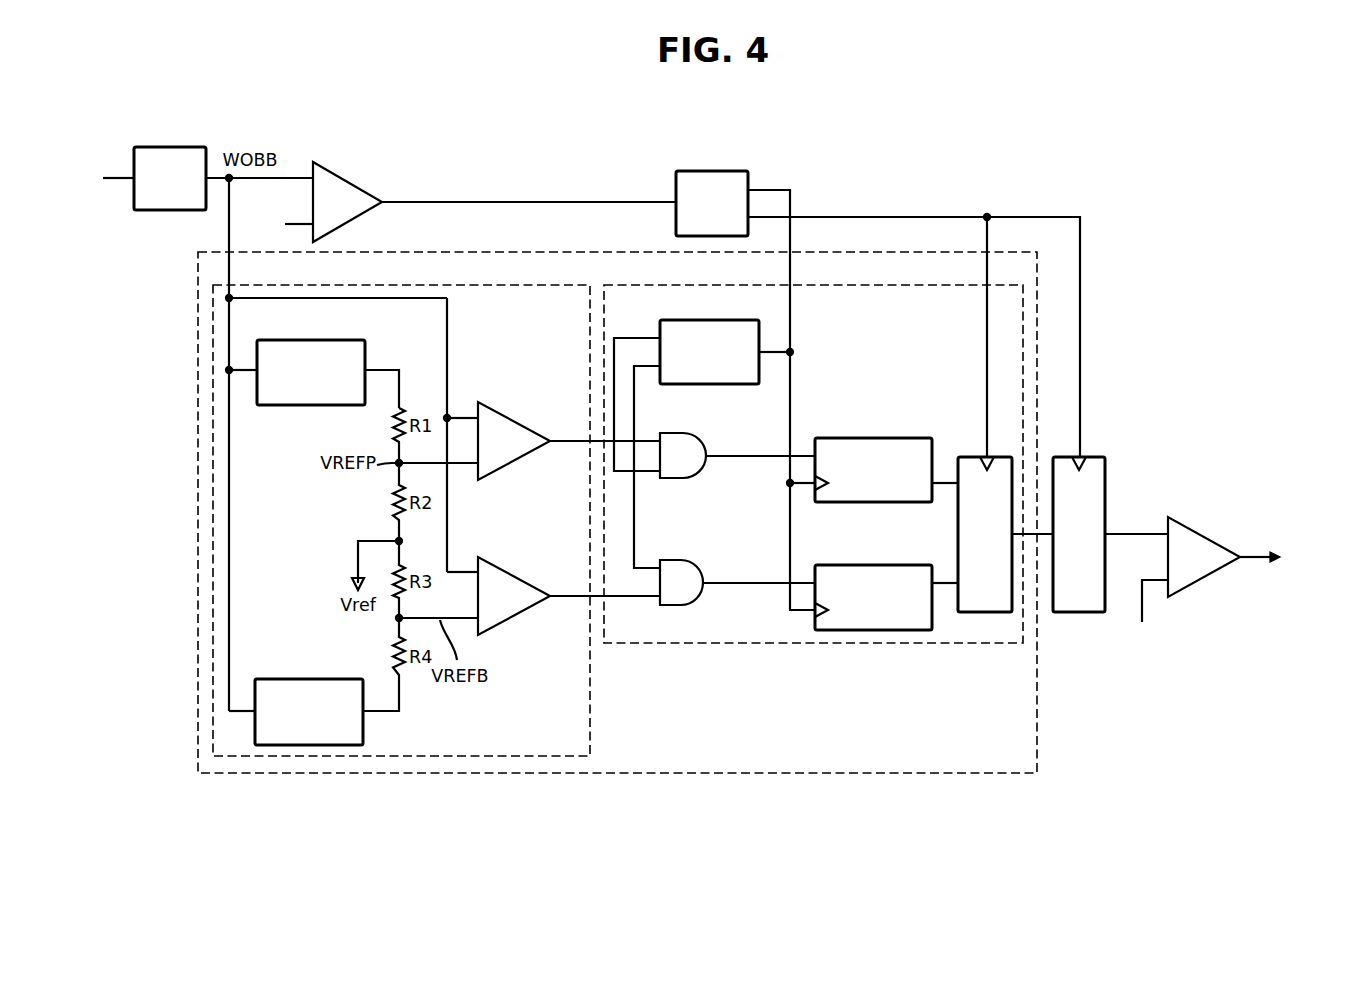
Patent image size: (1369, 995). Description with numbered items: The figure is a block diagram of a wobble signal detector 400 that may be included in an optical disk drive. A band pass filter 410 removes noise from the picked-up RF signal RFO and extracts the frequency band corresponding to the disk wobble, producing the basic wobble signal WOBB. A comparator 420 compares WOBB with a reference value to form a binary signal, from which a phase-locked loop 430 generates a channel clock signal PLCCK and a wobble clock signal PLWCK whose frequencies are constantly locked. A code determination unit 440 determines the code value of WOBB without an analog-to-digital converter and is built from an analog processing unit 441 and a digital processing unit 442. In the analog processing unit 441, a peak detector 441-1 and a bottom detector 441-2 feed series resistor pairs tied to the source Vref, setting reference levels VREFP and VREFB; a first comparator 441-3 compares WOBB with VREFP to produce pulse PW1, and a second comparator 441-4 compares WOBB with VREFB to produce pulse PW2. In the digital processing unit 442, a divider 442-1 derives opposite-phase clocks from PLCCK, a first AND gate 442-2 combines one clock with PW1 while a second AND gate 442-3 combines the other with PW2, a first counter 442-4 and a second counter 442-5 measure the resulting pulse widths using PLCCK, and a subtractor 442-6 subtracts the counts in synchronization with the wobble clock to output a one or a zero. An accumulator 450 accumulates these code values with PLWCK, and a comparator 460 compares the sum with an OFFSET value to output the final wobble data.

The wobble signal detector 400 is at (1112, 139).
The band pass filter 410 is at (172, 146).
The comparator 420 is at (350, 177).
The phase-locked loop 430 is at (712, 170).
The code determination unit 440 is at (590, 253).
The analog processing unit 441 is at (432, 286).
The peak detector 441-1 is at (297, 340).
The bottom detector 441-2 is at (297, 679).
The first comparator 441-3 is at (516, 417).
The second comparator 441-4 is at (516, 572).
The digital processing unit 442 is at (890, 286).
The divider 442-1 is at (700, 320).
The first AND gate 442-2 is at (680, 433).
The second AND gate 442-3 is at (680, 560).
The first counter 442-4 is at (873, 438).
The second counter 442-5 is at (873, 565).
The subtractor 442-6 is at (1003, 455).
The accumulator 450 is at (1098, 456).
The comparator 460 is at (1207, 530).